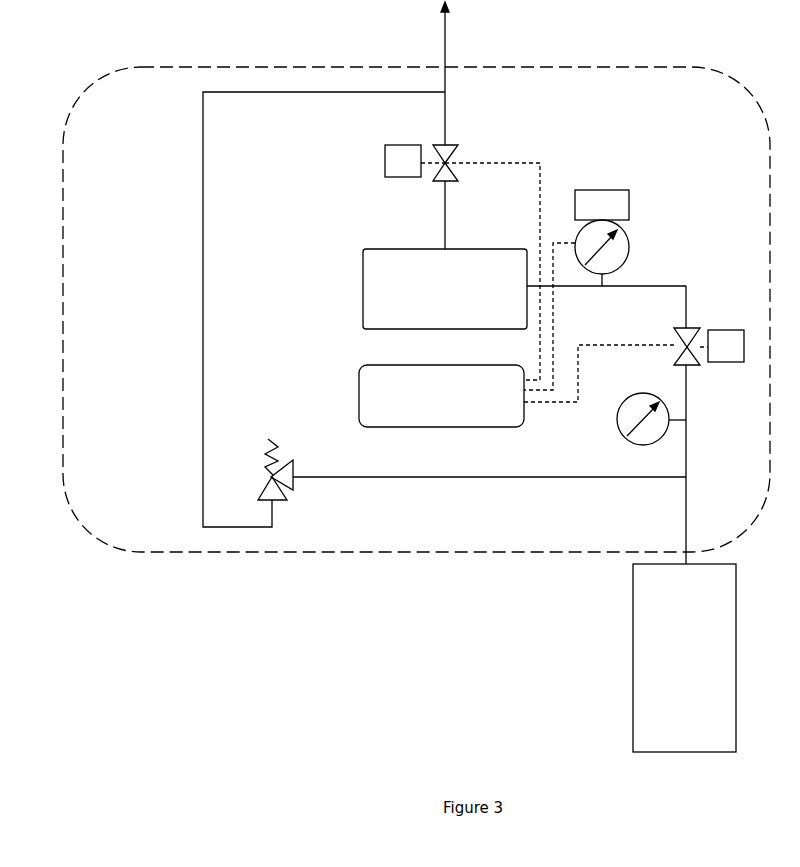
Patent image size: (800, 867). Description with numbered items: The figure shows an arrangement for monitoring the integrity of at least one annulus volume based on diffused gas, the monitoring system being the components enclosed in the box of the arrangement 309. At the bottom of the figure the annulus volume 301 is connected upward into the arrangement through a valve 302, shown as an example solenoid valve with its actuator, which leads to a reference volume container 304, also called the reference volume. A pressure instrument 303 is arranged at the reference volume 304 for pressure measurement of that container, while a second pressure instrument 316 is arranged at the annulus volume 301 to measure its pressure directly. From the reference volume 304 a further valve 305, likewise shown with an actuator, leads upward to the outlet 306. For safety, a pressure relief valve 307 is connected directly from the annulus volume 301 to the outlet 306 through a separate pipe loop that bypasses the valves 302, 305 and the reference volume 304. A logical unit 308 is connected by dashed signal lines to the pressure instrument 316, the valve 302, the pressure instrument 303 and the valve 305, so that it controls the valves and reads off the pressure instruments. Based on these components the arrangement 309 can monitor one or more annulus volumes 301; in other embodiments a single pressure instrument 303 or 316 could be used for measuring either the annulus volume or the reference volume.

The annulus volume 301 is at (684, 658).
The valve 302 is at (709, 336).
The pressure instrument 303 is at (602, 238).
The reference volume container 304 is at (445, 289).
The valve 305 is at (421, 151).
The outlet 306 is at (492, 72).
The pressure relief valve 307 is at (275, 456).
The logical unit 308 is at (516, 295).
The arrangement 309 is at (413, 292).
The pressure instrument 316 is at (651, 408).